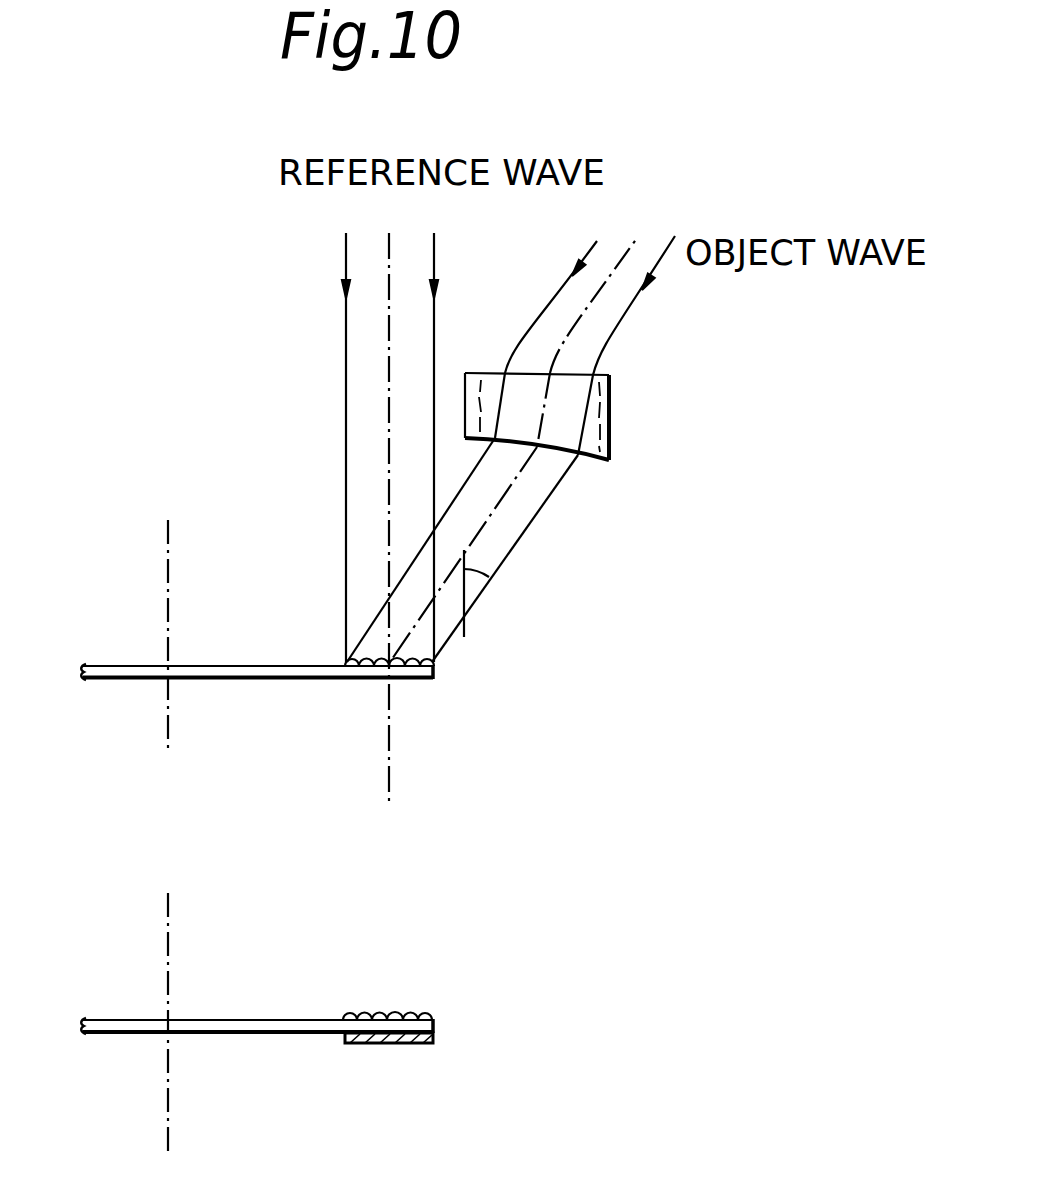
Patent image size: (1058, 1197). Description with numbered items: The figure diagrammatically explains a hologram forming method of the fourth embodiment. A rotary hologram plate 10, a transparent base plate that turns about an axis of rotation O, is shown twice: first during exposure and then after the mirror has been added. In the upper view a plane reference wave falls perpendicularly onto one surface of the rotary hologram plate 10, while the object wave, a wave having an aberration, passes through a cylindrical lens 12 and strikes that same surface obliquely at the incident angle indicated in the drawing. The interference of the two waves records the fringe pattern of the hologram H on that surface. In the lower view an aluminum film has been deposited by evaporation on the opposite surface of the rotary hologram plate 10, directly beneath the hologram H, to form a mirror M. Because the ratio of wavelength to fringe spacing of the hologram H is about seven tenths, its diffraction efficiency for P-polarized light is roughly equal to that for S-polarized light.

The rotary hologram plate 10 is at (230, 1015).
The cylindrical lens 12 is at (603, 418).
The hologram H is at (423, 661).
The mirror M is at (414, 1044).
The axis of rotation O is at (168, 605).